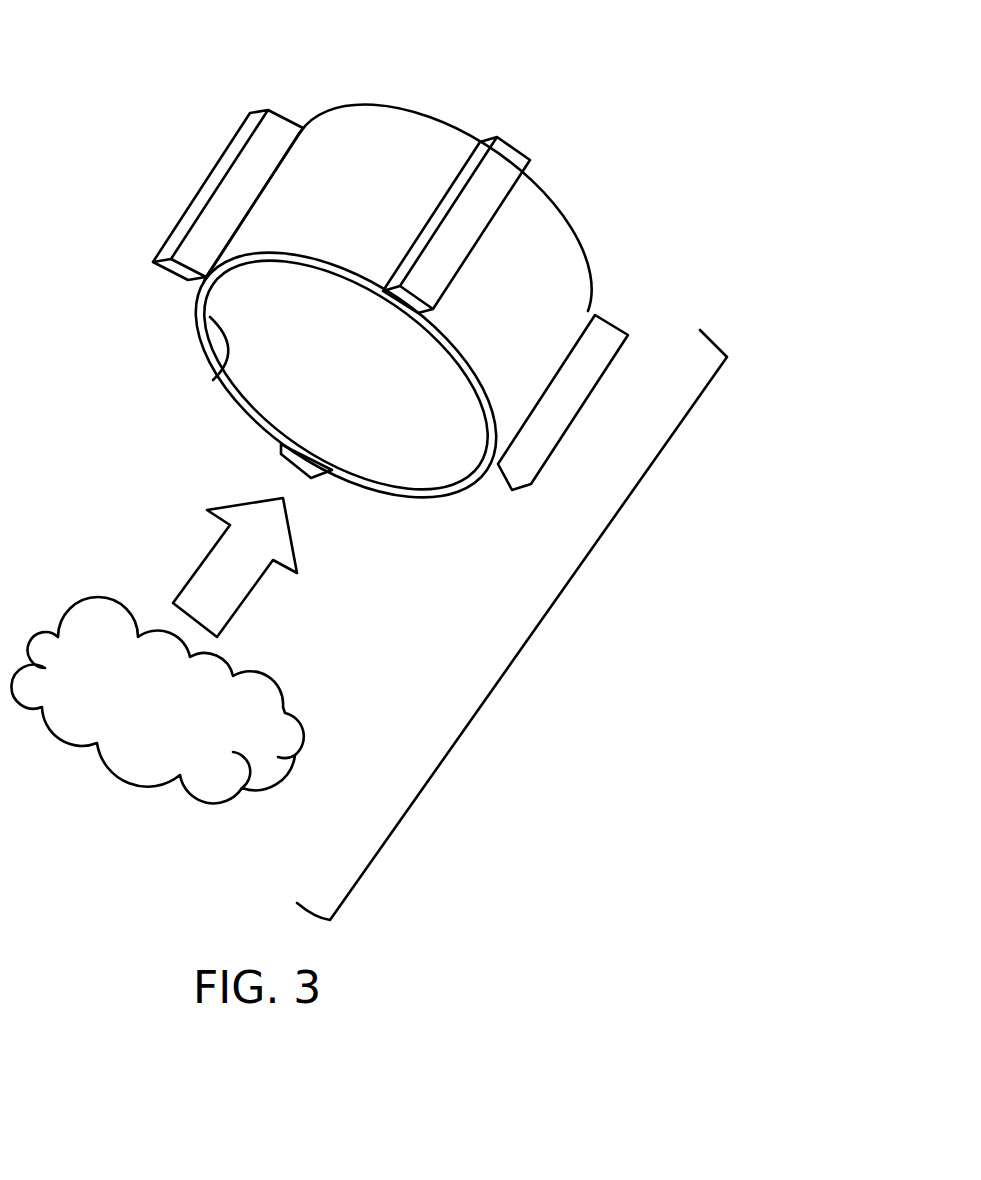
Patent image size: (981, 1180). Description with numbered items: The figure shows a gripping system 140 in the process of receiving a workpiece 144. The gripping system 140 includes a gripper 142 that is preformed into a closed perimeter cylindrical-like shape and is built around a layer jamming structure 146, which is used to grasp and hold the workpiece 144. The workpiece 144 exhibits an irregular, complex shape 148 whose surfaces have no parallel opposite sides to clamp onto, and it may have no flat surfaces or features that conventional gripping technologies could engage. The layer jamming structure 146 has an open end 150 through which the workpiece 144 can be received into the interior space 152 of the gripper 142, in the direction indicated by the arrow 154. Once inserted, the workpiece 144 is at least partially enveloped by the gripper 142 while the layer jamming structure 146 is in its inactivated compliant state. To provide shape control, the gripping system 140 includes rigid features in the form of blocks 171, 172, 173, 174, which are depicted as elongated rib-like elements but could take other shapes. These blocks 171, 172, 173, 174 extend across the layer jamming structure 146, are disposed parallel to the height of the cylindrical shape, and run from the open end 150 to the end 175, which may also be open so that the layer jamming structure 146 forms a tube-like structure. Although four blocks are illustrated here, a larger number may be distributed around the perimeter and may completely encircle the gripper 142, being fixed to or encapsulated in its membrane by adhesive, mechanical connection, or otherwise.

The gripping system 140 is at (529, 637).
The gripper 142 is at (593, 227).
The workpiece 144 is at (83, 753).
The layer jamming structure 146 is at (388, 130).
The irregular, complex shape 148 is at (103, 647).
The open end 150 is at (224, 364).
The interior space 152 is at (380, 356).
The arrow 154 is at (257, 590).
The block 171 is at (227, 160).
The block 172 is at (513, 152).
The block 173 is at (602, 330).
The block 174 is at (280, 445).
The end 175 is at (550, 197).